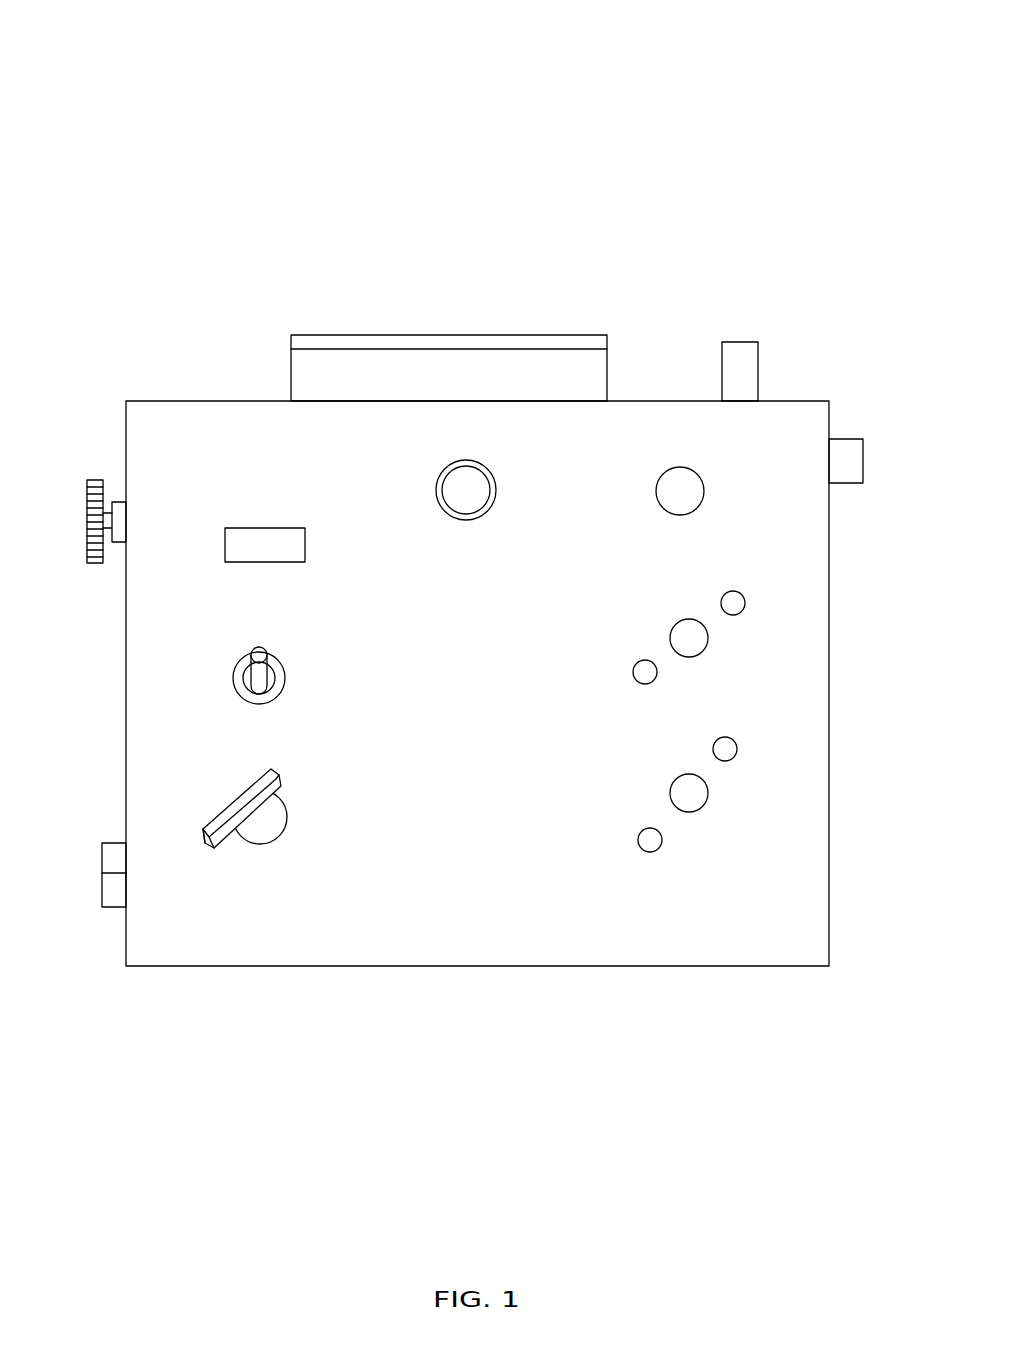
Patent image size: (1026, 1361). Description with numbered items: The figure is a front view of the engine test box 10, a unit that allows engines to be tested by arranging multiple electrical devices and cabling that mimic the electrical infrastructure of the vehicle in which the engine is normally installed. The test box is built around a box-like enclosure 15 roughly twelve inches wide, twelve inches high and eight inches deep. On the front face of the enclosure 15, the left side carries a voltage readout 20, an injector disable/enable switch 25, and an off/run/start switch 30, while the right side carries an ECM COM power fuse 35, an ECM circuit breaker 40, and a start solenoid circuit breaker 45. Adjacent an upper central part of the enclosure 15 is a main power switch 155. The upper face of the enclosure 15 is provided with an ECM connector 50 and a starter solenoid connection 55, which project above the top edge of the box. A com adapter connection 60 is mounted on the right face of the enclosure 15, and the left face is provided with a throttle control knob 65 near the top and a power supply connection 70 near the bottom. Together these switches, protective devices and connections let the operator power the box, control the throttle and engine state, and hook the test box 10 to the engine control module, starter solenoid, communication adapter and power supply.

The engine test box 10 is at (108, 172).
The enclosure 15 is at (462, 895).
The voltage readout 20 is at (264, 543).
The injector disable/enable switch 25 is at (248, 660).
The off/run/start switch 30 is at (260, 828).
The ECM COM power fuse 35 is at (679, 479).
The ECM circuit breaker 40 is at (689, 638).
The start solenoid circuit breaker 45 is at (689, 793).
The ECM connector 50 is at (377, 357).
The starter solenoid connection 55 is at (735, 355).
The com adapter connection 60 is at (857, 462).
The throttle control knob 65 is at (90, 492).
The power supply connection 70 is at (113, 890).
The main power switch 155 is at (456, 485).